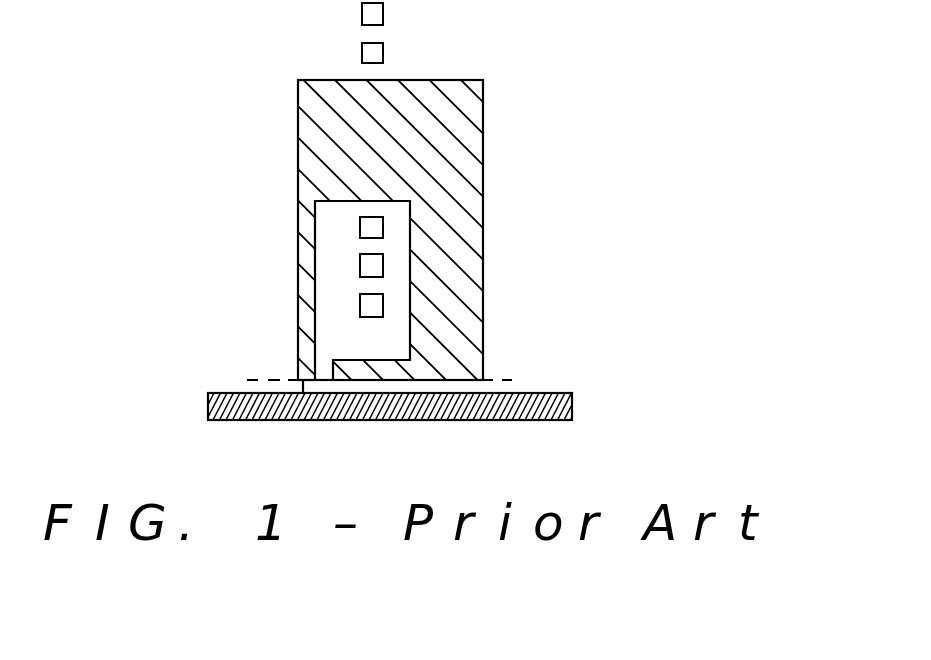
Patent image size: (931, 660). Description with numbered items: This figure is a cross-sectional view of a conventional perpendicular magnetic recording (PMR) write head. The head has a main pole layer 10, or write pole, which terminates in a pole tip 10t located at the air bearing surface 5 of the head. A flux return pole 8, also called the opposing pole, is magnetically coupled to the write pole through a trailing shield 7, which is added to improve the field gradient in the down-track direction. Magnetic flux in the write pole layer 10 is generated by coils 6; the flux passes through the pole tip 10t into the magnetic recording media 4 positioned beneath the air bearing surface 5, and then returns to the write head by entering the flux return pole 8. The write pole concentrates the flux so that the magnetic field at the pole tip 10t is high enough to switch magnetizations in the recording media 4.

The magnetic recording media 4 is at (210, 398).
The air bearing surface 5 is at (382, 384).
The coils 6 is at (371, 228).
The trailing shield 7 is at (472, 267).
The flux return pole 8 is at (393, 373).
The main pole layer 10 is at (303, 354).
The pole tip 10t is at (303, 393).